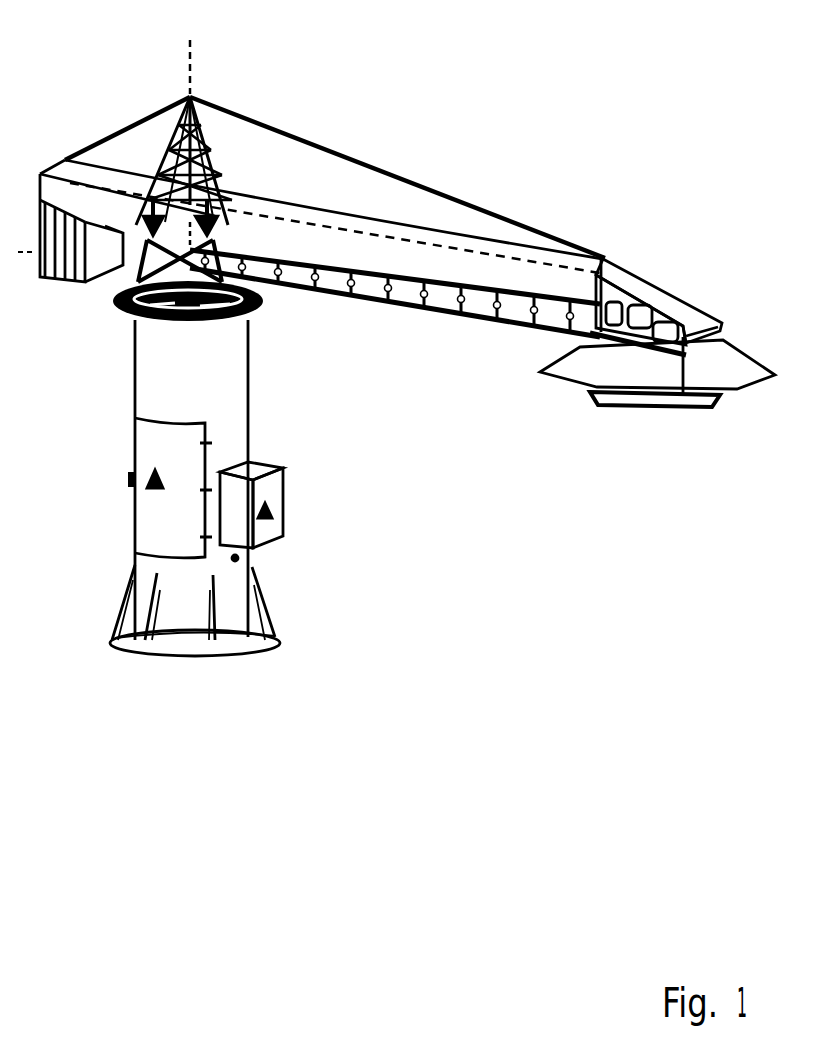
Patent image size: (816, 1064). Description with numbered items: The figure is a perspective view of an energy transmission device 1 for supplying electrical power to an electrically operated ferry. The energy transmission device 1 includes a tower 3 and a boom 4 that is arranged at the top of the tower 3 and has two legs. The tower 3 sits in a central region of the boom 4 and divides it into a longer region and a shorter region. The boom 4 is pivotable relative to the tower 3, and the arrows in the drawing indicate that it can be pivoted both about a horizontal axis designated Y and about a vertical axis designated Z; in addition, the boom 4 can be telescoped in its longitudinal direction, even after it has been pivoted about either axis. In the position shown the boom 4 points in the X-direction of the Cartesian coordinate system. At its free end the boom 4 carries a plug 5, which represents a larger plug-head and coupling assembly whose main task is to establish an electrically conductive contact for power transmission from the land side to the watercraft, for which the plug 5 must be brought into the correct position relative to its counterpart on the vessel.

The energy transmission device 1 is at (446, 158).
The tower 3 is at (215, 382).
The boom 4 is at (393, 249).
The plug 5 is at (690, 413).